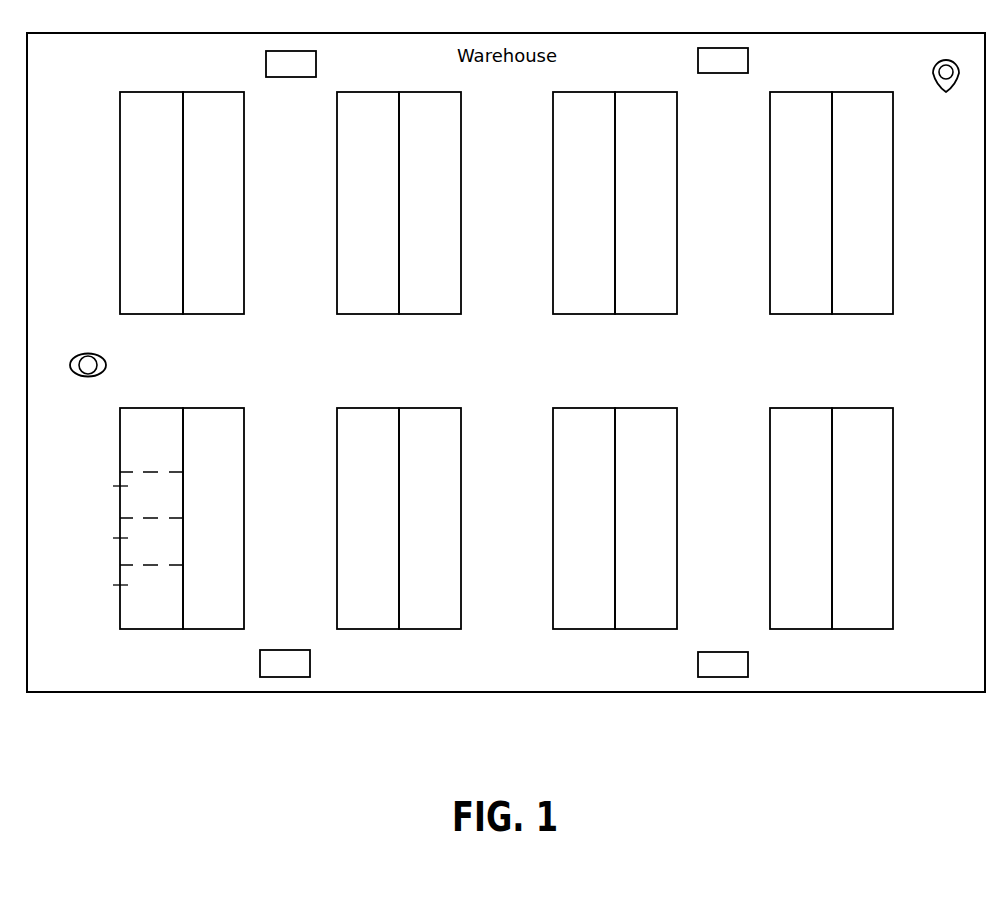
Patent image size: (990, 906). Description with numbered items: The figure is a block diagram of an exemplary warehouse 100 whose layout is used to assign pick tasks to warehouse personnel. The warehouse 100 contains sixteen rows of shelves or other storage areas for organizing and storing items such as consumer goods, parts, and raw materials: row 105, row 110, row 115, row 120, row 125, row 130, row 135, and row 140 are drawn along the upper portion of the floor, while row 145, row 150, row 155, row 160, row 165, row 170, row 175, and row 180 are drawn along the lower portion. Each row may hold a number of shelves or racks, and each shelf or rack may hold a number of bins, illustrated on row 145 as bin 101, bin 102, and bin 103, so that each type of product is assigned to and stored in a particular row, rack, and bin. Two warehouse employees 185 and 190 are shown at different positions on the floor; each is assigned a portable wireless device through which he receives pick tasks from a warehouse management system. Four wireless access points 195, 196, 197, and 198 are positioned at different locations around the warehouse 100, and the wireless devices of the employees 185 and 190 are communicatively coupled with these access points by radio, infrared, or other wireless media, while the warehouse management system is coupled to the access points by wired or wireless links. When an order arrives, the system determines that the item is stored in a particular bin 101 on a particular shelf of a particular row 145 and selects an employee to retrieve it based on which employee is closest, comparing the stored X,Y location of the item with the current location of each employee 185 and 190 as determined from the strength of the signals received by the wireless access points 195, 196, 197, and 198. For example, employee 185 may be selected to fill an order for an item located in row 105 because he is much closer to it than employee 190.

The warehouse 100 is at (506, 362).
The bin 101 is at (115, 486).
The bin 102 is at (115, 538).
The bin 103 is at (115, 585).
The row 105 is at (151, 203).
The row 110 is at (213, 203).
The row 115 is at (368, 203).
The row 120 is at (430, 203).
The row 125 is at (584, 203).
The row 130 is at (646, 203).
The row 135 is at (801, 203).
The row 140 is at (862, 203).
The row 145 is at (120, 629).
The row 150 is at (213, 518).
The row 155 is at (368, 518).
The row 160 is at (430, 518).
The row 165 is at (584, 518).
The row 170 is at (646, 518).
The row 175 is at (801, 518).
The row 180 is at (862, 518).
The warehouse employee 185 is at (106, 365).
The warehouse employee 190 is at (946, 92).
The wireless access point 195 is at (293, 78).
The wireless access point 196 is at (285, 650).
The wireless access point 197 is at (720, 73).
The wireless access point 198 is at (725, 652).